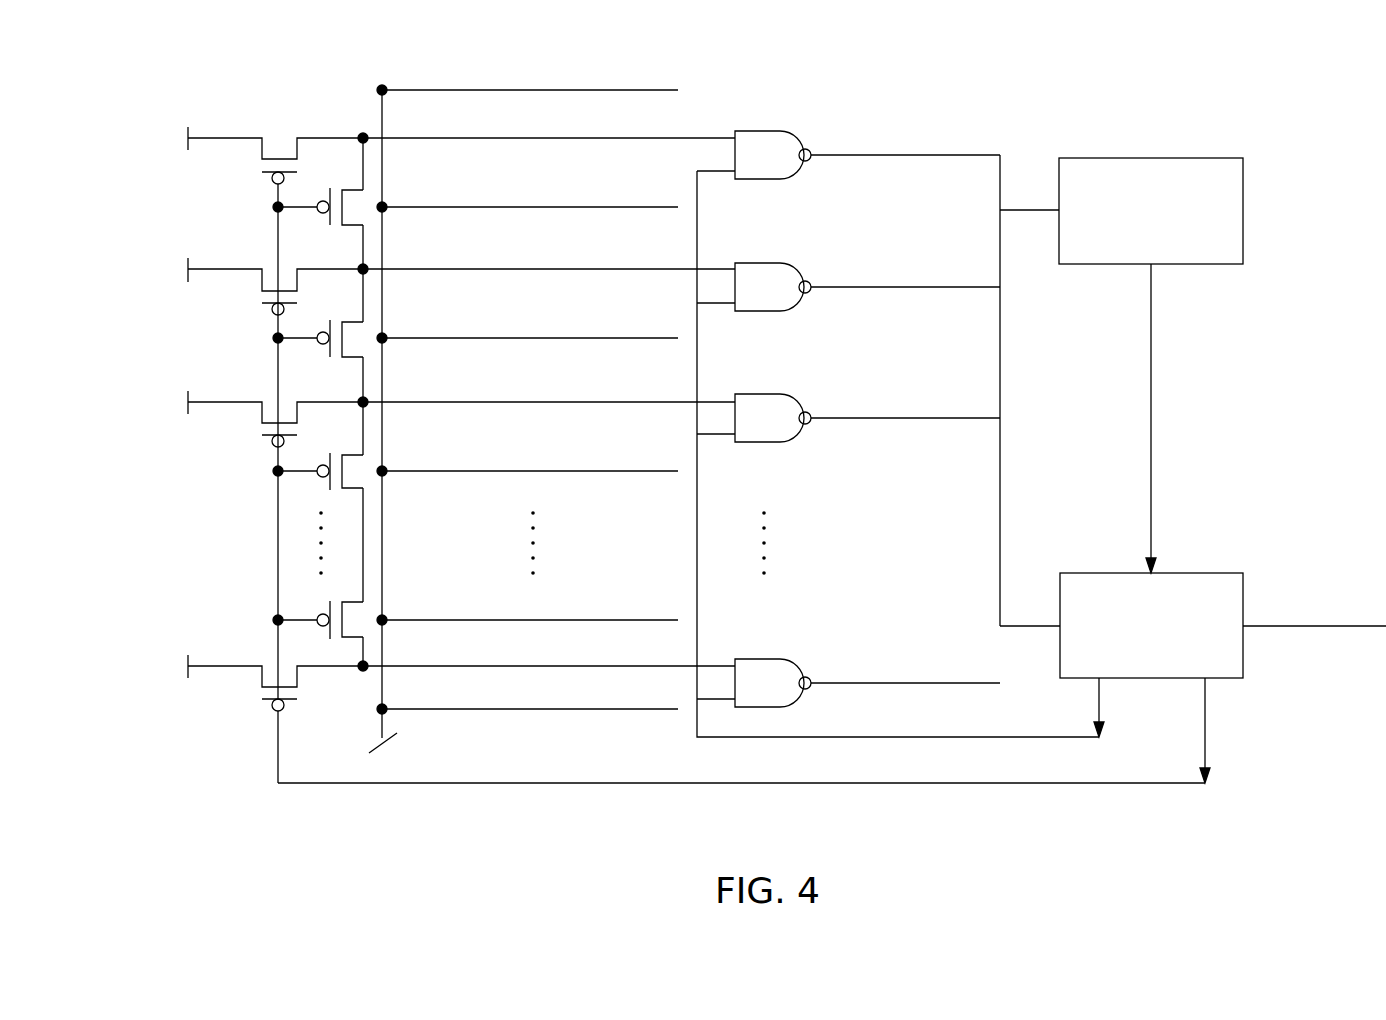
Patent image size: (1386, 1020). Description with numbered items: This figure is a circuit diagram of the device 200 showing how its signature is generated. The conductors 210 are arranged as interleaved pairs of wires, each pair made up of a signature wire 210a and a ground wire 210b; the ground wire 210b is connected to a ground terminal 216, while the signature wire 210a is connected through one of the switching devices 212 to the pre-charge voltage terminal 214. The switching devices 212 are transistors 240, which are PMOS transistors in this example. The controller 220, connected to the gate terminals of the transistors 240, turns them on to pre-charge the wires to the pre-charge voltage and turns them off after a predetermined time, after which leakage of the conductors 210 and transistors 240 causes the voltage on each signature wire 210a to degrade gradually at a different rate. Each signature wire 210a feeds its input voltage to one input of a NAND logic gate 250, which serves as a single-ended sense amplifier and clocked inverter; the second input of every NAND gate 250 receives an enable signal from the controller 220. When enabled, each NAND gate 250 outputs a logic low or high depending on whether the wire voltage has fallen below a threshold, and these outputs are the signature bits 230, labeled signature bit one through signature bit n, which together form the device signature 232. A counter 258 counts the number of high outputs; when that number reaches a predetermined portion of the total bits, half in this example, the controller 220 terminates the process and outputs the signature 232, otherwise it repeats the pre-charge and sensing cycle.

The device 200 is at (1122, 110).
The conductors 210 is at (585, 753).
The signature wire 210a is at (518, 135).
The ground wire 210b is at (430, 88).
The switching devices 212 is at (197, 512).
The pre-charge voltage terminal 214 is at (150, 120).
The ground terminal 216 is at (376, 752).
The controller 220 is at (1174, 655).
The signature bits 230 is at (898, 105).
The device signature 232 is at (1316, 558).
The transistors 240 is at (255, 278).
The NAND logic gate 250 is at (757, 131).
The counter 258 is at (1174, 242).